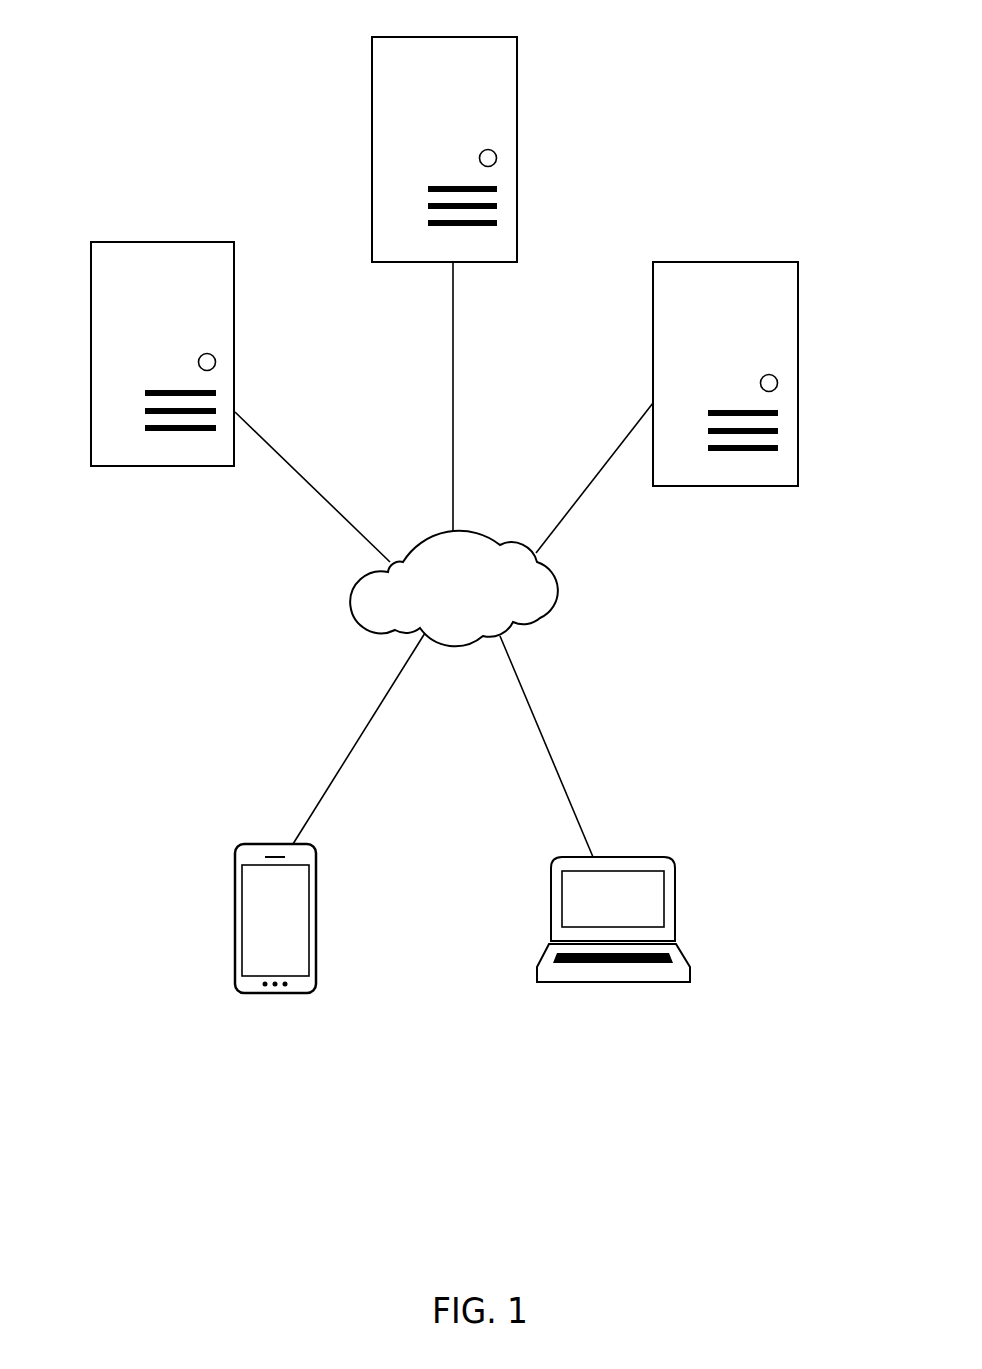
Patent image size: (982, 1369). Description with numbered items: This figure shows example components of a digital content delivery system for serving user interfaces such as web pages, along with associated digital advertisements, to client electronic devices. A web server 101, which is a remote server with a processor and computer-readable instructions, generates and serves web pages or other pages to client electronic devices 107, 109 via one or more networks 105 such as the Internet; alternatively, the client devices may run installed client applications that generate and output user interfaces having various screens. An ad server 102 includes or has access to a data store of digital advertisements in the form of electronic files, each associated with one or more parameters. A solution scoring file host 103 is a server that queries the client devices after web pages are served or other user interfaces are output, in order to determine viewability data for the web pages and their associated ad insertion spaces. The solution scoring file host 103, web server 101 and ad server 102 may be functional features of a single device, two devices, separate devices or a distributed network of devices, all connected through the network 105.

The web server 101 is at (125, 243).
The ad server 102 is at (397, 36).
The solution scoring file host 103 is at (744, 261).
The network 105 is at (539, 622).
The client electronic device 107 is at (275, 993).
The client electronic device 109 is at (613, 982).